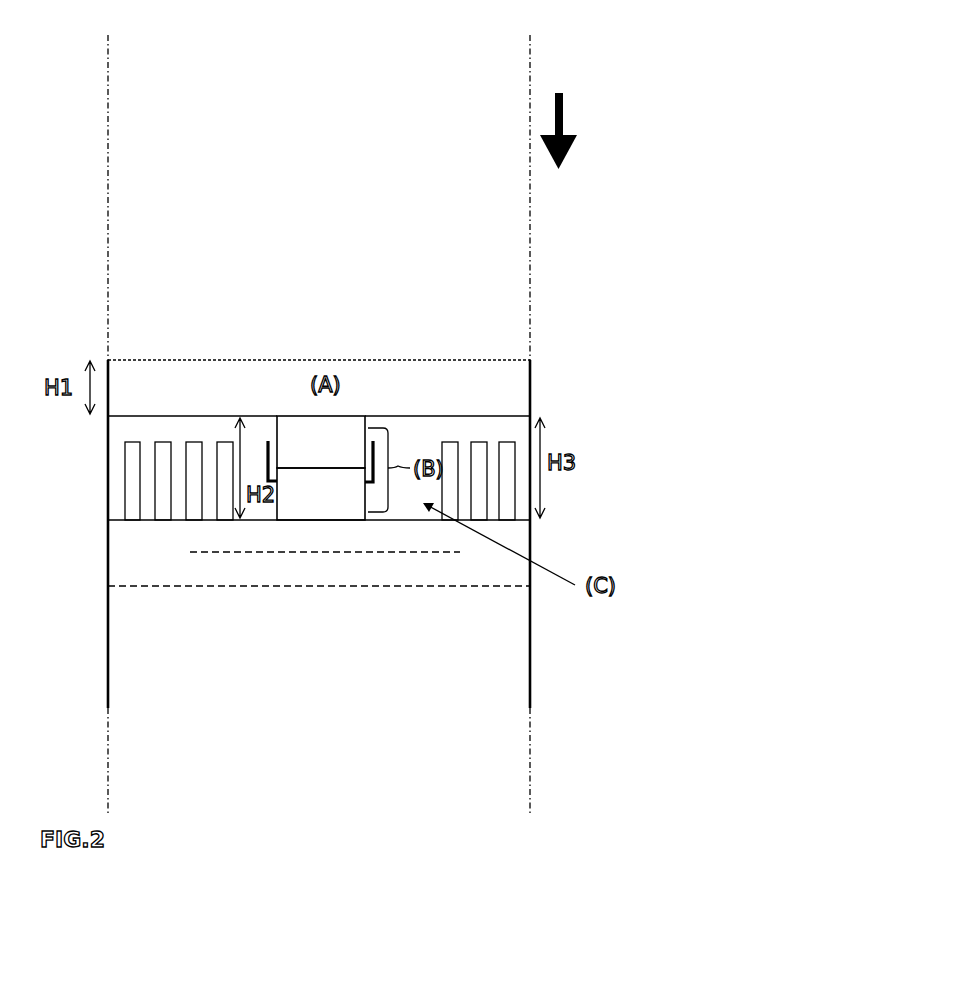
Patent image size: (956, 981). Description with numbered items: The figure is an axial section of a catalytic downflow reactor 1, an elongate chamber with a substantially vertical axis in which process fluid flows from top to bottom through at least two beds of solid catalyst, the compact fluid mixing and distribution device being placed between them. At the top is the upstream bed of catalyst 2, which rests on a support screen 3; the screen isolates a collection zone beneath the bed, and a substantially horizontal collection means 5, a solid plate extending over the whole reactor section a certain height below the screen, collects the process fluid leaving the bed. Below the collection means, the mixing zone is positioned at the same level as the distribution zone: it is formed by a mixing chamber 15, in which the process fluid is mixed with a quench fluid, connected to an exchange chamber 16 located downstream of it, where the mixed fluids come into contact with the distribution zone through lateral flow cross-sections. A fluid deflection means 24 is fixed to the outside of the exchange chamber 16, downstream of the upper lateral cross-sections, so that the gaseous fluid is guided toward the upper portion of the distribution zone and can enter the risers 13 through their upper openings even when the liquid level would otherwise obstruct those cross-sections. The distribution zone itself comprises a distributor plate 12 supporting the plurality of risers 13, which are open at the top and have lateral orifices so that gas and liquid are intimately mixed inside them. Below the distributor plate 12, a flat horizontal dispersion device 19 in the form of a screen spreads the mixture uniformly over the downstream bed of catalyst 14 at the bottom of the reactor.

The reactor 1 is at (107, 252).
The bed of catalyst 2 is at (316, 222).
The support screen 3 is at (115, 358).
The collection means 5 is at (483, 417).
The distributor plate 12 is at (145, 518).
The risers 13 is at (508, 452).
The bed of catalyst 14 is at (334, 689).
The mixing chamber 15 is at (334, 450).
The exchange chamber 16 is at (334, 513).
The dispersion device 19 is at (443, 554).
The fluid deflection means 24 is at (268, 437).